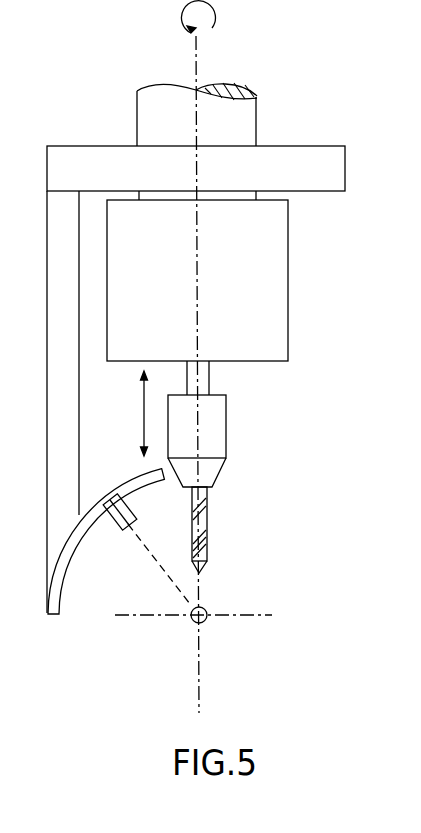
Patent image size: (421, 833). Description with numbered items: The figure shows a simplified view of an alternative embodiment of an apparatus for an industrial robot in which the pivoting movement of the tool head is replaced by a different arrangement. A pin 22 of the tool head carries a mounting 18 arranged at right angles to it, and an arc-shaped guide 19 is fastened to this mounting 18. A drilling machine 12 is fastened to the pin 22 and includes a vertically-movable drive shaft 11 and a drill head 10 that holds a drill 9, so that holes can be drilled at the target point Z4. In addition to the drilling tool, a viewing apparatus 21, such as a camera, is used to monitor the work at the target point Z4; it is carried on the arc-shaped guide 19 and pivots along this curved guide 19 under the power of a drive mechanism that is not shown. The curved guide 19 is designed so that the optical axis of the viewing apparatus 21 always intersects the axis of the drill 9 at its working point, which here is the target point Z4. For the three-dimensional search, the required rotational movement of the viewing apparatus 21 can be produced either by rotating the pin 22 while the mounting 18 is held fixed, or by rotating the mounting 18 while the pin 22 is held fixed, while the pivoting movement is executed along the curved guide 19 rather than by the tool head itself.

The drill 9 is at (202, 530).
The drill head 10 is at (213, 435).
The drive shaft 11 is at (203, 379).
The drilling machine 12 is at (270, 267).
The mounting 18 is at (333, 165).
The arc-shaped guide 19 is at (53, 583).
The viewing apparatus 21 is at (113, 508).
The pin 22 is at (245, 120).
The target point Z4 is at (195, 623).